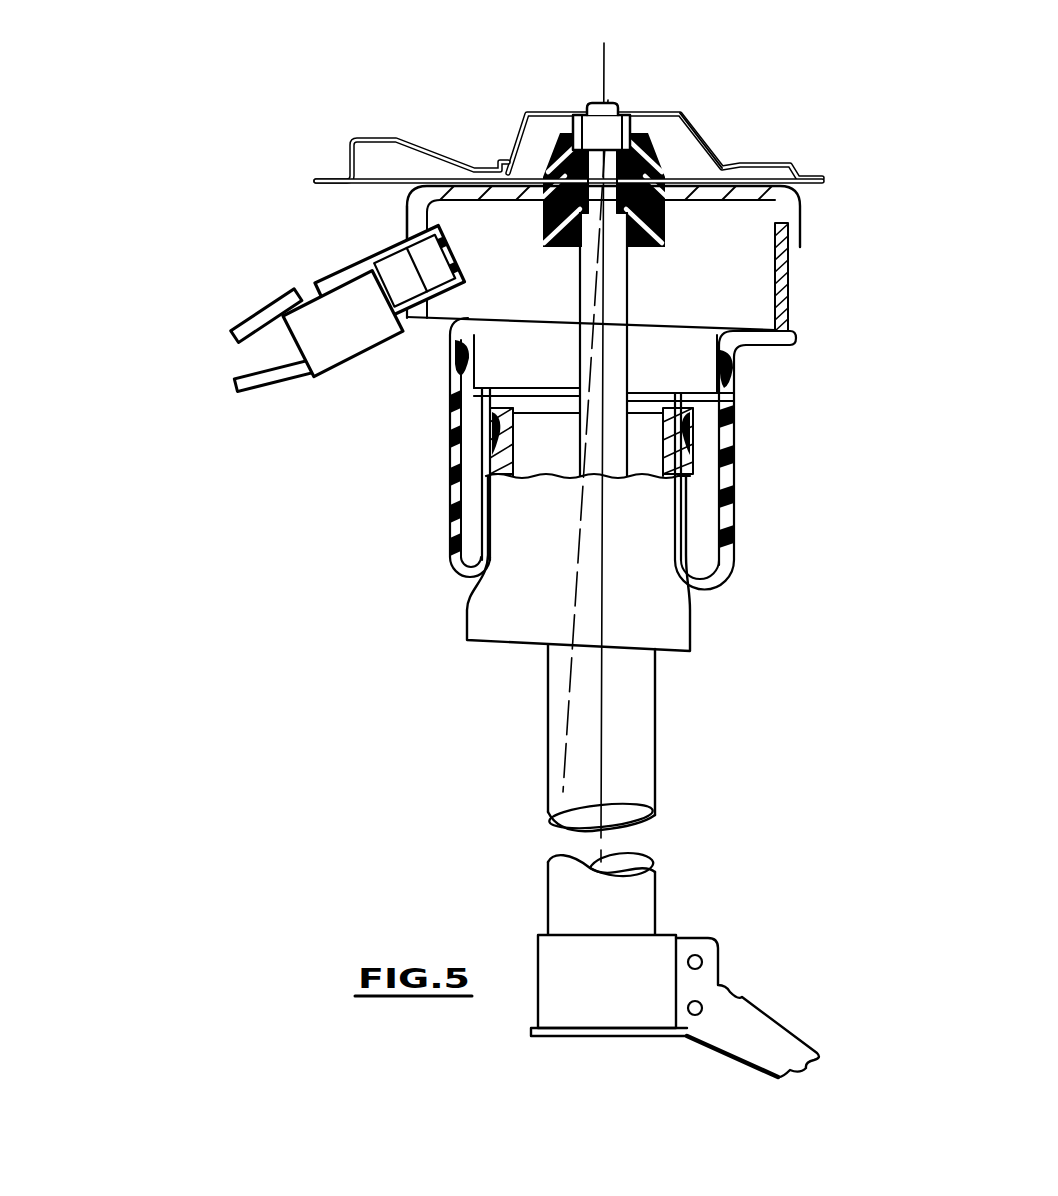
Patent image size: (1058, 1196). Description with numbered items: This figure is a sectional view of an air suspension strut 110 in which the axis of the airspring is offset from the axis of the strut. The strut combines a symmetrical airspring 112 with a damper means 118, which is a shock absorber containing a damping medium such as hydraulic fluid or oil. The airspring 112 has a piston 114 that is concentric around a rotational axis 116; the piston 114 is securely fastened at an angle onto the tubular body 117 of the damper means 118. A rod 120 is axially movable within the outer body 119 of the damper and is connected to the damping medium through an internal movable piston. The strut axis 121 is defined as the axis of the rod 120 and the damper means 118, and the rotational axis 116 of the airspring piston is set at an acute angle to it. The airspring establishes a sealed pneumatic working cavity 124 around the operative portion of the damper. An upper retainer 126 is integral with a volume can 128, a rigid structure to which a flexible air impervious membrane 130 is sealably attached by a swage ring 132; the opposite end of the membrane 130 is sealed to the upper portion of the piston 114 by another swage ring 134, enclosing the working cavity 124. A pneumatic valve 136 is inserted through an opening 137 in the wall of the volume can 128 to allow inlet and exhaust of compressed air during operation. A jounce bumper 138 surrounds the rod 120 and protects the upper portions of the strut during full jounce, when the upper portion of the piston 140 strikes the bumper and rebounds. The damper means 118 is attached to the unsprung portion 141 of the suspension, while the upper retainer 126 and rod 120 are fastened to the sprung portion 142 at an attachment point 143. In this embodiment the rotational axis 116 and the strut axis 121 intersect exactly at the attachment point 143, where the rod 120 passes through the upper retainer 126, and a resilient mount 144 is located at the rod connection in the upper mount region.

The air suspension strut 110 is at (781, 92).
The symmetrical airspring 112 is at (755, 442).
The airspring piston 114 is at (690, 633).
The rotational axis 116 is at (568, 726).
The tubular body 117 is at (655, 684).
The damper means 118 is at (676, 730).
The outer body 119 is at (648, 810).
The rod 120 is at (618, 302).
The strut axis 121 is at (606, 58).
The working cavity 124 is at (762, 302).
The upper retainer 126 is at (796, 198).
The volume can 128 is at (407, 203).
The flexible membrane 130 is at (735, 510).
The swage ring 132 is at (736, 377).
The swage ring 134 is at (495, 438).
The pneumatic valve 136 is at (332, 360).
The opening 137 is at (408, 240).
The jounce bumper 138 is at (665, 236).
The upper portion of the piston 140 is at (545, 420).
The unsprung portion 141 is at (707, 982).
The sprung portion 142 is at (394, 137).
The attachment point 143 is at (688, 168).
The retaining nut 144 is at (650, 148).